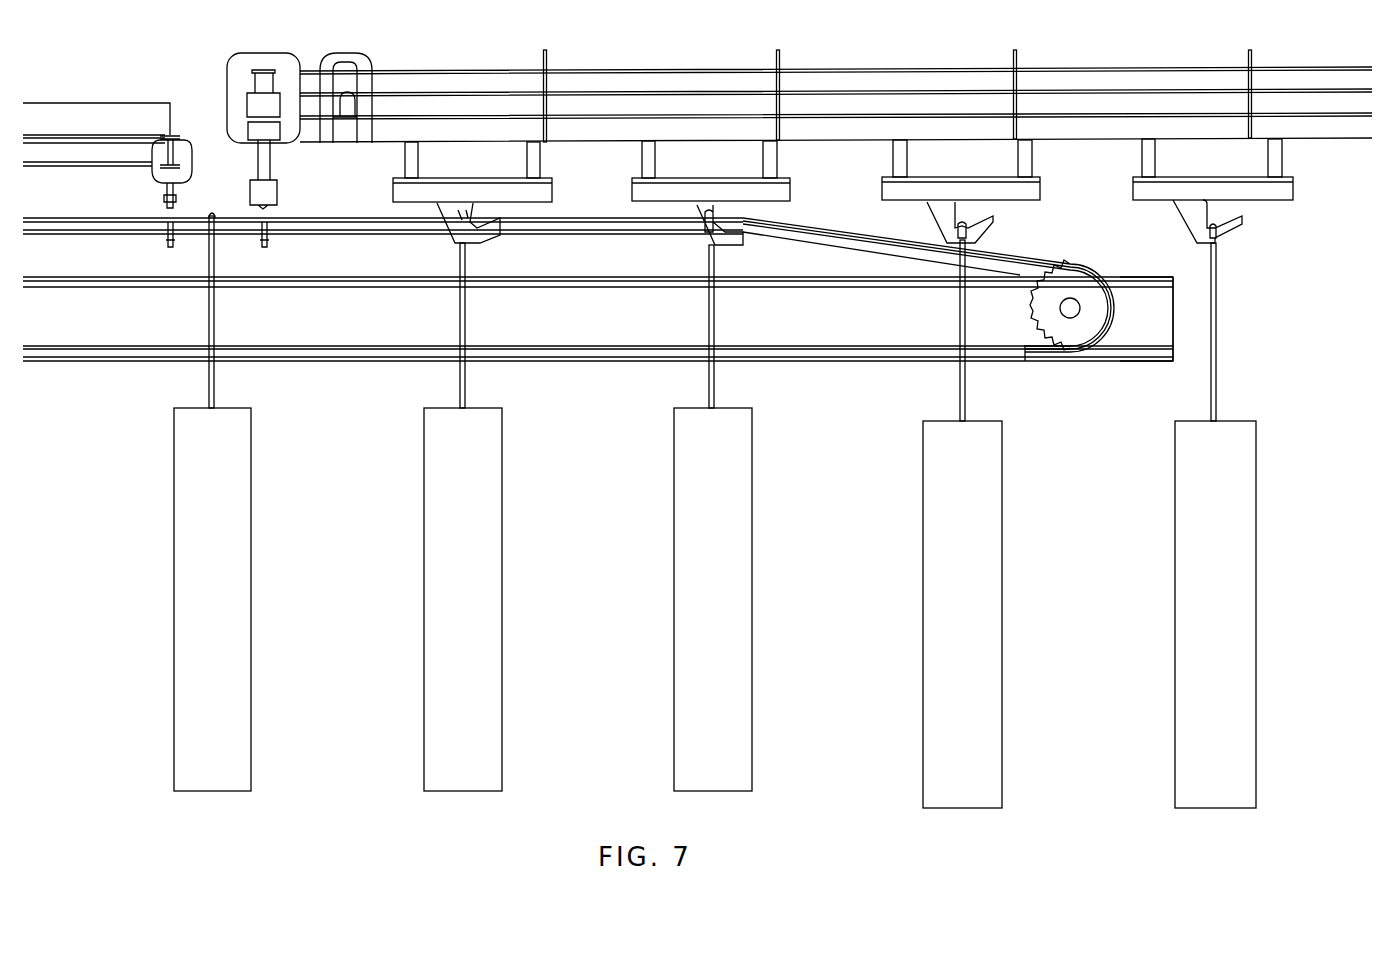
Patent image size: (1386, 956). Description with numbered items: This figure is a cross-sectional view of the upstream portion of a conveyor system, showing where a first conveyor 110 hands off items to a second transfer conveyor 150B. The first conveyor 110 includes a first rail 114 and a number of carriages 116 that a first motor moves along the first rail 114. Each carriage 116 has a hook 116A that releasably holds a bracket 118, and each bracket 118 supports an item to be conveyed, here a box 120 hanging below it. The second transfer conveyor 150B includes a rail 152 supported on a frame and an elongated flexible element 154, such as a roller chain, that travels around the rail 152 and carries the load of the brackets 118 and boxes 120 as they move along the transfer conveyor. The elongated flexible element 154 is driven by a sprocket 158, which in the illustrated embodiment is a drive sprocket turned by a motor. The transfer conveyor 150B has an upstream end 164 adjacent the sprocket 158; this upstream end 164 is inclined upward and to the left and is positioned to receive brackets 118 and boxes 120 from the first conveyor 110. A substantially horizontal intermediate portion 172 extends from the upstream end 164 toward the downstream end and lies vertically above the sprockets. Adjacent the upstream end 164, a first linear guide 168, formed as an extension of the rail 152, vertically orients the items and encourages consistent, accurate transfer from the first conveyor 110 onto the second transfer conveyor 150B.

The first conveyor 110 is at (1131, 29).
The first rail 114 is at (1173, 80).
The carriage 116 is at (1270, 222).
The hook 116A is at (1226, 238).
The bracket 118 is at (1217, 312).
The box 120 is at (1252, 458).
The second transfer conveyor 150B is at (596, 384).
The rail 152 is at (817, 330).
The elongated flexible element 154 is at (1037, 356).
The sprocket 158 is at (1072, 284).
The upstream end 164 is at (1060, 227).
The first linear guide 168 is at (1146, 340).
The intermediate portion 172 is at (584, 200).